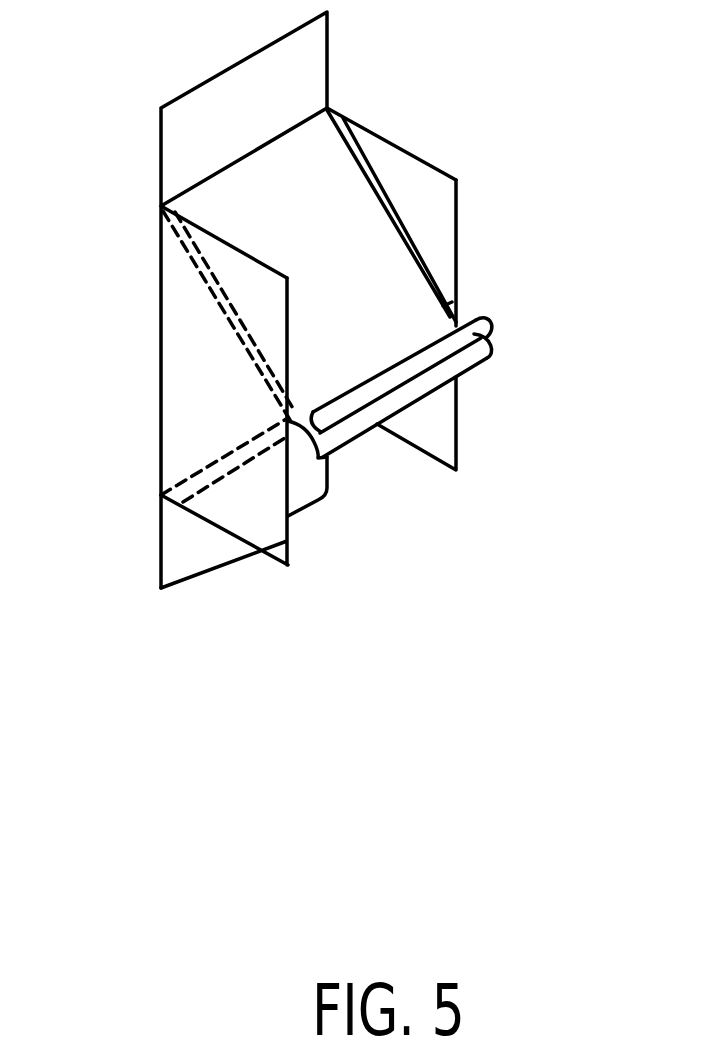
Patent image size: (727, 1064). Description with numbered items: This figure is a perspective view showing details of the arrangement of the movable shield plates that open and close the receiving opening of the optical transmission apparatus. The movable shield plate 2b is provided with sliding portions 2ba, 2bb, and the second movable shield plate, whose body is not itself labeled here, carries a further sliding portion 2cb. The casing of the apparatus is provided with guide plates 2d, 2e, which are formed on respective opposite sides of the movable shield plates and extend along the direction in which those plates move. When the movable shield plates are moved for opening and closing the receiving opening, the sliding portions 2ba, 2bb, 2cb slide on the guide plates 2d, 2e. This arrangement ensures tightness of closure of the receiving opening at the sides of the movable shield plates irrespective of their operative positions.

The movable shield plate 2b is at (337, 190).
The guide plate 2d is at (428, 185).
The guide plate 2e is at (266, 540).
The sliding portion 2ba is at (428, 270).
The sliding portion 2bb is at (217, 300).
The sliding portion 2cb is at (208, 468).